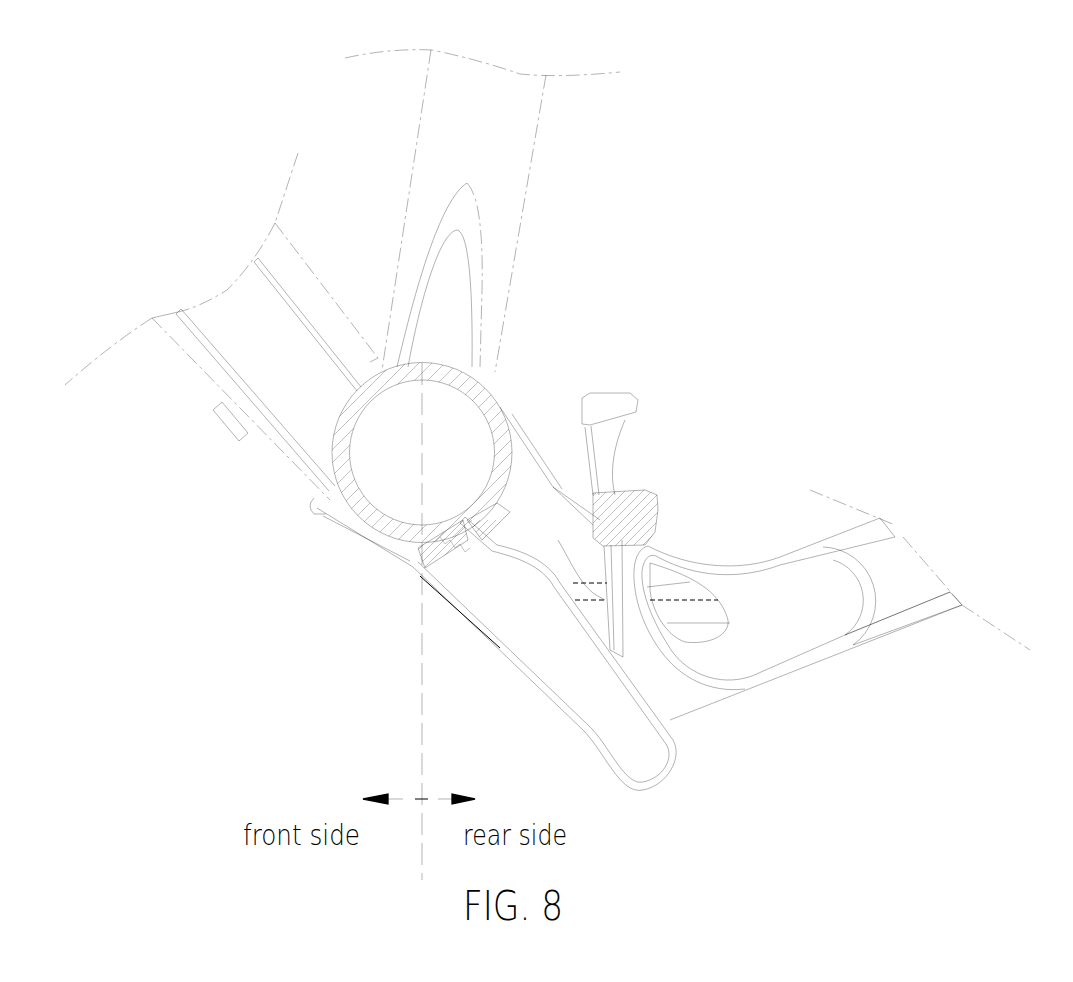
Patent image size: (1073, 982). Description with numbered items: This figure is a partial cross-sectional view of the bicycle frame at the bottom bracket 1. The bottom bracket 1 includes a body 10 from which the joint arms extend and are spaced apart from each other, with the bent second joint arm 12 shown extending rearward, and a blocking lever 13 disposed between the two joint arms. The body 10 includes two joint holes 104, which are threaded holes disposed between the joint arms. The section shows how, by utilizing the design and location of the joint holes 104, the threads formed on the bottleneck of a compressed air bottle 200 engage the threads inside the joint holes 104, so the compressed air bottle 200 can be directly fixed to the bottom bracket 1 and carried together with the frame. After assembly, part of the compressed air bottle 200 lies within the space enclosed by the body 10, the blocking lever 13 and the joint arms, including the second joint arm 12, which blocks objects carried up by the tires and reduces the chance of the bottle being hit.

The bottom bracket 1 is at (503, 393).
The body 10 is at (370, 528).
The joint holes 104 is at (412, 570).
The compressed air bottles 200 is at (553, 710).
The blocking lever 13 is at (627, 563).
The second joint arm 12 is at (805, 663).